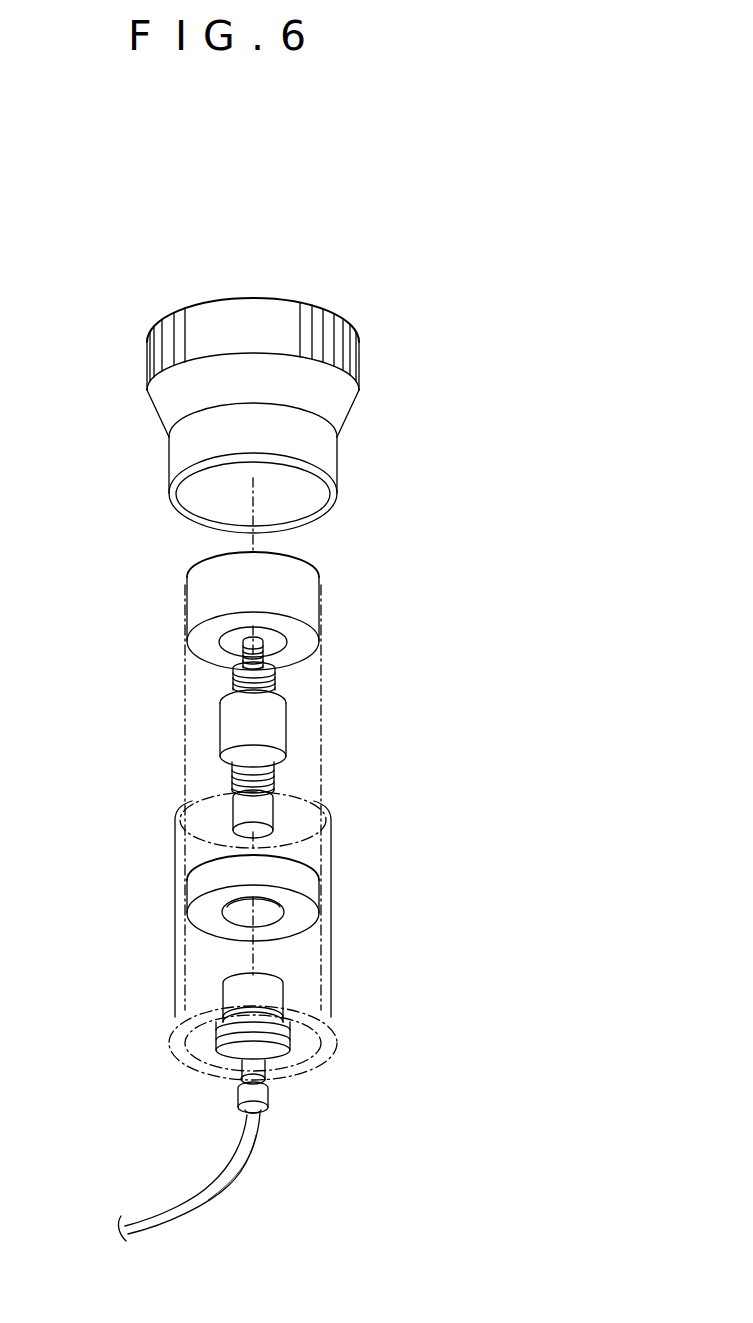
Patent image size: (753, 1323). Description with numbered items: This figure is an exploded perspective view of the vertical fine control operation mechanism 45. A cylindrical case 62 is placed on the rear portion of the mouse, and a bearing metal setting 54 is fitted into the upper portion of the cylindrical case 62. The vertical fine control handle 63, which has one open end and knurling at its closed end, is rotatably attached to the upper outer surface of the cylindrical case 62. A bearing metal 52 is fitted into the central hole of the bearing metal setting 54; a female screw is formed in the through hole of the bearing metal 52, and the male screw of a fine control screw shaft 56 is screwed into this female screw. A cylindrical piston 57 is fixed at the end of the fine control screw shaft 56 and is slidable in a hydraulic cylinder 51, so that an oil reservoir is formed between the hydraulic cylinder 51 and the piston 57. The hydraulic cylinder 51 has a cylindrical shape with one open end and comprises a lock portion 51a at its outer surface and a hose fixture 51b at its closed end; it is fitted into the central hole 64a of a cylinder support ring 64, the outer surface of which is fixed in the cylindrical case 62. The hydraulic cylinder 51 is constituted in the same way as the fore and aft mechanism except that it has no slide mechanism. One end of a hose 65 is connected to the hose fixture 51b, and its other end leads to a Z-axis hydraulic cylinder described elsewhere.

The vertical fine control operation mechanism 45 is at (312, 285).
The vertical fine control handle 63 is at (237, 307).
The cylindrical case 62 is at (178, 917).
The bearing metal setting 54 is at (307, 602).
The bearing metal 52 is at (276, 722).
The fine control screw shaft 56 is at (275, 785).
The piston 57 is at (268, 818).
The cylinder support ring 64 is at (303, 905).
The central hole 64a is at (283, 918).
The hydraulic cylinder 51 is at (285, 1000).
The lock portion 51a is at (290, 1038).
The hose fixture 51b is at (260, 1067).
The hose 65 is at (161, 1208).